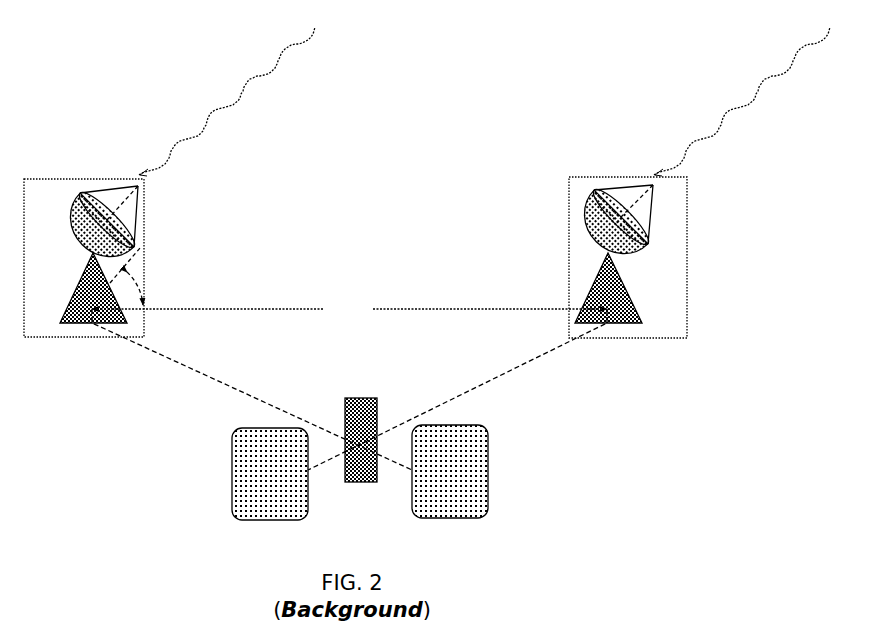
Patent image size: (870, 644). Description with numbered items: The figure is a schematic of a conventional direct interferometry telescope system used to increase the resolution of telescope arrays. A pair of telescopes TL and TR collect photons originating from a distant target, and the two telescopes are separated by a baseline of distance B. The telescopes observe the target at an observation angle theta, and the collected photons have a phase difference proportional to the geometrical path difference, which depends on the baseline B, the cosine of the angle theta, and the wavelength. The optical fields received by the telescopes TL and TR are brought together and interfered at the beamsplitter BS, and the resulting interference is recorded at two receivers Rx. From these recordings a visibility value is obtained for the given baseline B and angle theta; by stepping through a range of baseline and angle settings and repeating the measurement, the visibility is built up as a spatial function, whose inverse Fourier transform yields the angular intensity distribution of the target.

The left telescope TL is at (169, 182).
The right telescope TR is at (699, 182).
The baseline distance B is at (349, 309).
The observation angle theta is at (134, 276).
The beamsplitter BS is at (349, 395).
The receivers Rx is at (360, 472).